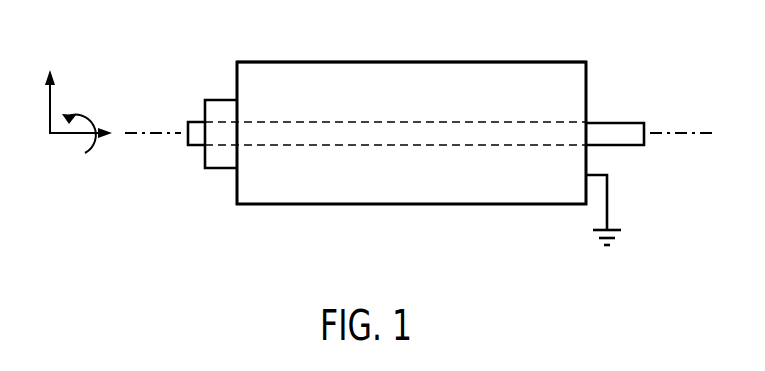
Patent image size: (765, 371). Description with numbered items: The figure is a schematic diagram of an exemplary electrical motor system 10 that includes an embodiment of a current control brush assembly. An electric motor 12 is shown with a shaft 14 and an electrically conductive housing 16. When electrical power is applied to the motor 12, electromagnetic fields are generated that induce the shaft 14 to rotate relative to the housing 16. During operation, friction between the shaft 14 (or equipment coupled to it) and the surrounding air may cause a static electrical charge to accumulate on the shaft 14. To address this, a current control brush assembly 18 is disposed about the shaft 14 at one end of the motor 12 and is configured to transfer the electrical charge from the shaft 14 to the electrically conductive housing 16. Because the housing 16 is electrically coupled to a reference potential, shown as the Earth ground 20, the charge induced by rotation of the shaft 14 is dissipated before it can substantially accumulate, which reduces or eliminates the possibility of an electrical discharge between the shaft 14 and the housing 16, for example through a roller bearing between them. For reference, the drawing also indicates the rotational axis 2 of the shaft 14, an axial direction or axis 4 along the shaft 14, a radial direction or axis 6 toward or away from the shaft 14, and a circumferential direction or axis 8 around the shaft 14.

The rotational axis 2 is at (671, 133).
The axial direction 4 is at (75, 135).
The radial direction 6 is at (50, 105).
The circumferential direction 8 is at (90, 120).
The electrical motor system 10 is at (590, 33).
The electric motor 12 is at (356, 80).
The shaft 14 is at (616, 122).
The electrically conductive housing 16 is at (411, 62).
The current control brush assembly 18 is at (222, 100).
The Earth ground 20 is at (607, 200).